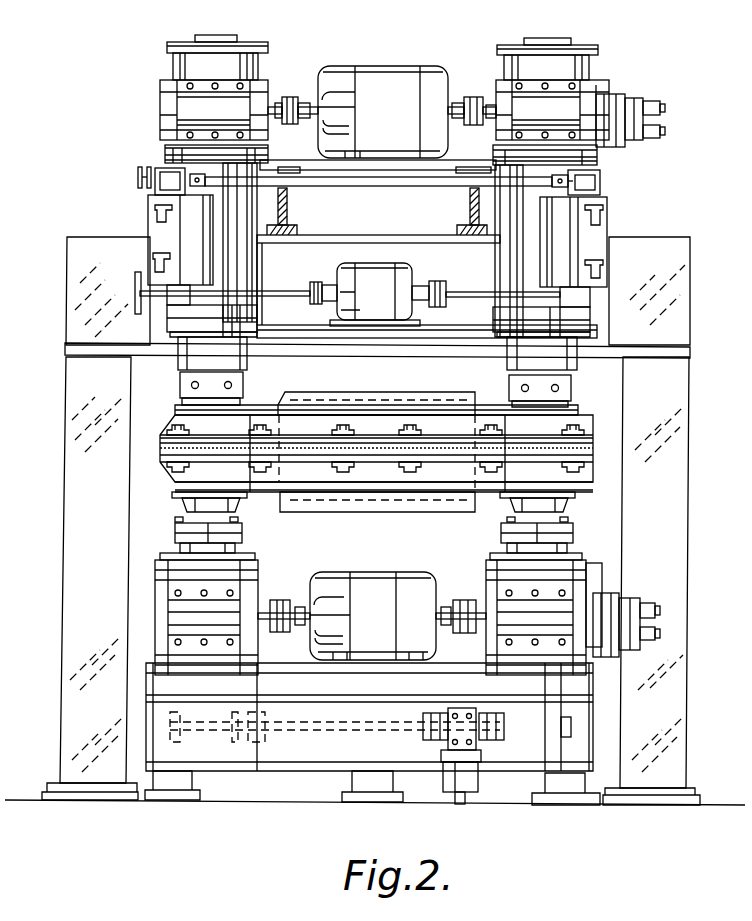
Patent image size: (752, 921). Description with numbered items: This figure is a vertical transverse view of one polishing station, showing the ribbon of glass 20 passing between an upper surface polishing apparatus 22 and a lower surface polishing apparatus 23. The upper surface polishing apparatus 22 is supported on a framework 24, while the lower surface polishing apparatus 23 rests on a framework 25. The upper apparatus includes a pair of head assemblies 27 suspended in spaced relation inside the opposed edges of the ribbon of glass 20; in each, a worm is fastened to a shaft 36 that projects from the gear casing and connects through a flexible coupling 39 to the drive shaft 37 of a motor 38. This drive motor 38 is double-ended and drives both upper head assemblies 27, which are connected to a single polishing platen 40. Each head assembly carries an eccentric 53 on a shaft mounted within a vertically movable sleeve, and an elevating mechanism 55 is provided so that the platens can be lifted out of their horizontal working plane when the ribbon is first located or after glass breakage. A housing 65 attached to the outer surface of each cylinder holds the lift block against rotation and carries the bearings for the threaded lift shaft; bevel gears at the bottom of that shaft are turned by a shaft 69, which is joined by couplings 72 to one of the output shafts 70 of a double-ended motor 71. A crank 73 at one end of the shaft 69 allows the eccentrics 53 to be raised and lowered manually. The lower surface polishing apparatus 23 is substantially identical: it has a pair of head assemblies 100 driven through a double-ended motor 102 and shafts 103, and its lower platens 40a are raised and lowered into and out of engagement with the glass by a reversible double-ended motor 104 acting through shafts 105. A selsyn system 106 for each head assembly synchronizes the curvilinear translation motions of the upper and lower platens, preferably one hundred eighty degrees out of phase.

The ribbon of glass 20 is at (160, 454).
The upper surface polishing apparatus 22 is at (128, 175).
The lower surface polishing apparatus 23 is at (168, 538).
The framework 24 is at (617, 243).
The framework 25 is at (192, 712).
The head assembly 27 is at (158, 85).
The shaft 36 is at (276, 100).
The drive shaft 37 is at (307, 104).
The motor 38 is at (384, 90).
The flexible coupling 39 is at (291, 95).
The polishing platen 40 is at (324, 421).
The lower platen 40a is at (320, 482).
The eccentric 53 is at (178, 385).
The elevating mechanism 55 is at (172, 228).
The housing 65 is at (160, 248).
The shaft 69 is at (272, 292).
The output shaft 70 is at (330, 289).
The double-ended motor 71 is at (385, 263).
The coupling 72 is at (313, 284).
The crank 73 is at (137, 312).
The head assembly 100 is at (152, 580).
The double-ended motor 102 is at (380, 597).
The shaft 103 is at (296, 608).
The reversible double-ended motor 104 is at (470, 770).
The shaft 105 is at (435, 712).
The selsyn system 106 is at (641, 110).